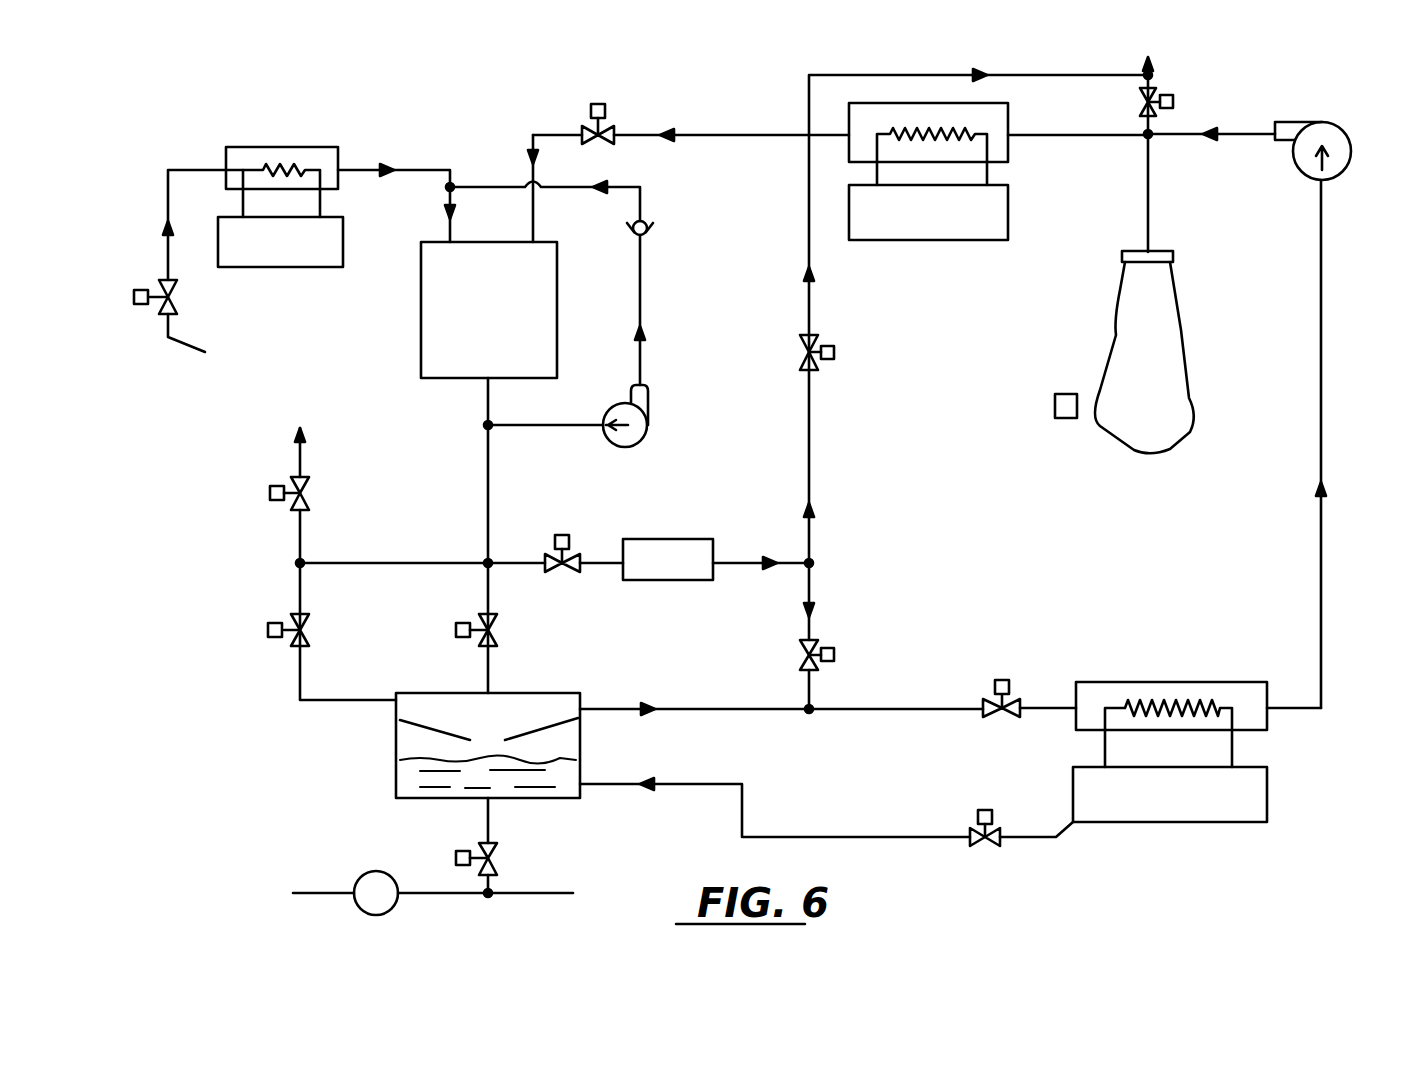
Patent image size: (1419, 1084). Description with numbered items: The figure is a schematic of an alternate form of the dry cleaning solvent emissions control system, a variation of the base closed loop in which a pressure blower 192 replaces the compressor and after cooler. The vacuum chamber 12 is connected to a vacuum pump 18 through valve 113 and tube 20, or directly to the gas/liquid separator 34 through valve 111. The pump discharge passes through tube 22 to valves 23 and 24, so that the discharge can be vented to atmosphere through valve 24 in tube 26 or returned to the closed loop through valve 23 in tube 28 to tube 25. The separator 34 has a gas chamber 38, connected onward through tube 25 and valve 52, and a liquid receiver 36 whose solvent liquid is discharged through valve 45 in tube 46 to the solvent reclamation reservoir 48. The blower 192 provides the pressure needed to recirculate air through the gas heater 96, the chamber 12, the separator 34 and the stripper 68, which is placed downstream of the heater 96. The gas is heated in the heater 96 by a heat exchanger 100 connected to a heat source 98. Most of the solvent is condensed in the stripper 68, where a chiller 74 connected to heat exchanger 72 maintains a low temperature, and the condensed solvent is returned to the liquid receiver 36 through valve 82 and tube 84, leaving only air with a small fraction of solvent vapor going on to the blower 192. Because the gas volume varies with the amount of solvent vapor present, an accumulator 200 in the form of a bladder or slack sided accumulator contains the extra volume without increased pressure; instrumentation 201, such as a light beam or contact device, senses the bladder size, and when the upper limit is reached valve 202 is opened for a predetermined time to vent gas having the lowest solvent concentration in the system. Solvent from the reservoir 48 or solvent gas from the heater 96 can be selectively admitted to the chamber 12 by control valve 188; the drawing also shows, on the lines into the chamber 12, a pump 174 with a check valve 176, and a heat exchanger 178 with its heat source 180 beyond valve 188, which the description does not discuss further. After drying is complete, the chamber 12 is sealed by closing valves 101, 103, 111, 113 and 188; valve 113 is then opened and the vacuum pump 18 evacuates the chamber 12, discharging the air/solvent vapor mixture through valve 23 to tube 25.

The vacuum chamber 12 is at (421, 336).
The vacuum pump 18 is at (714, 521).
The tube 20 is at (605, 565).
The tube 22 is at (755, 562).
The valve 23 is at (792, 653).
The valve 24 is at (832, 342).
The tube 25 is at (862, 712).
The tube 26 is at (809, 476).
The tube 28 is at (809, 622).
The gas/liquid separator 34 is at (380, 740).
The liquid receiver 36 is at (410, 775).
The gas chamber 38 is at (433, 675).
The valve 45 is at (500, 860).
The tube 46 is at (455, 893).
The solvent reclamation reservoir 48 is at (381, 872).
The valve 52 is at (1015, 690).
The stripper 68 is at (1150, 682).
The heat exchanger 72 is at (1225, 700).
The chiller 74 is at (1267, 775).
The valve 82 is at (968, 834).
The tube 84 is at (830, 835).
The gas heater 96 is at (1016, 106).
The heat source 98 is at (1008, 220).
The heat exchanger 100 is at (908, 128).
The valve 101 is at (313, 632).
The valve 103 is at (313, 488).
The valve 111 is at (500, 635).
The valve 113 is at (571, 546).
The pump 174 is at (648, 428).
The check valve 176 is at (648, 236).
The heat exchanger 178 is at (338, 147).
The heat source 180 is at (343, 217).
The control valve 188 is at (178, 300).
The pressure blower 192 is at (1340, 118).
The accumulator 200 is at (1190, 358).
The instrumentation 201 is at (1055, 404).
The valve 202 is at (1168, 92).